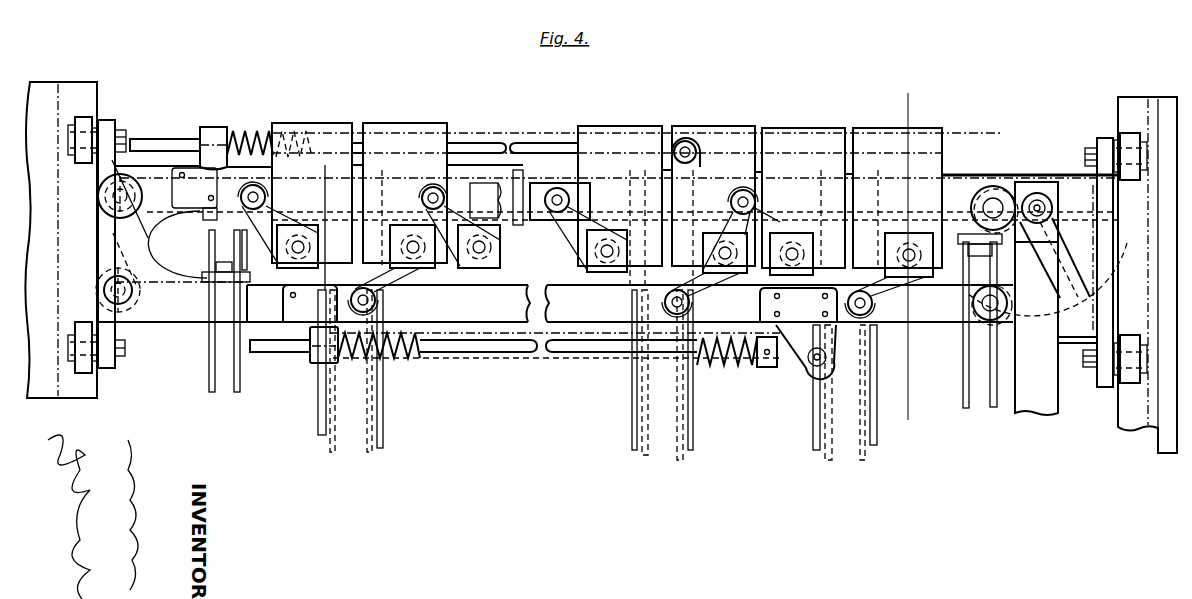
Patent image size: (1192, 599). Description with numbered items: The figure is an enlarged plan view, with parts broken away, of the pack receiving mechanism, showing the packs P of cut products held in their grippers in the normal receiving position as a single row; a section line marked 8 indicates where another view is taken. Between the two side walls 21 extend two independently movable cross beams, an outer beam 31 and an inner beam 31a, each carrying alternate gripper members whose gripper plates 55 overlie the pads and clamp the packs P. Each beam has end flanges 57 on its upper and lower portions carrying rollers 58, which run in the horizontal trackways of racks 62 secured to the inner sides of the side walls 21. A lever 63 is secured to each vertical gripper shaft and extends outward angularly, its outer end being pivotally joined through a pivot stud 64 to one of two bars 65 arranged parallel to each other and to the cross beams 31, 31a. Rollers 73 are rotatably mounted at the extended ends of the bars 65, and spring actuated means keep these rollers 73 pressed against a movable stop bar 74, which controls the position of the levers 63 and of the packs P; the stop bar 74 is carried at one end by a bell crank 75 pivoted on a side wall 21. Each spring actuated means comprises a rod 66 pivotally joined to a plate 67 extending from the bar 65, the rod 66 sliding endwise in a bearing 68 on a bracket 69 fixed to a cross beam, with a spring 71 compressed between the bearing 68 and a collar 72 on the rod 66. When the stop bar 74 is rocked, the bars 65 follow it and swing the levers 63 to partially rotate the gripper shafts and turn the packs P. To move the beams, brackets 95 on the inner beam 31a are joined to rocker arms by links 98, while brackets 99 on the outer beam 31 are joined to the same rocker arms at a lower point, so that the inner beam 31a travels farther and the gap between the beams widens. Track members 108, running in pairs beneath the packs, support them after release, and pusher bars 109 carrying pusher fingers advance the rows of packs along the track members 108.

The side wall 21 is at (36, 82).
The roller 58 is at (80, 117).
The end flange 57 is at (112, 122).
The rack 62 is at (97, 397).
The bracket 99 is at (200, 217).
The rod 66 is at (472, 141).
The spring 71 is at (242, 128).
The bearing 68 is at (312, 364).
The bracket 69 is at (284, 306).
The pack P is at (323, 123).
The lever 63 is at (283, 243).
The pivot stud 64 is at (422, 198).
The gripper plate 55 is at (492, 214).
The outer beam 31 is at (529, 222).
The inner beam 31a is at (922, 334).
The plate 67 is at (692, 144).
The collar 72 is at (765, 370).
The bar 65 is at (472, 321).
The bracket 95 is at (228, 281).
The link 98 is at (209, 376).
The track member 108 is at (320, 412).
The pusher bar 109 is at (367, 450).
The roller 73 is at (994, 186).
The bell crank 75 is at (1098, 262).
The stop bar 74 is at (1036, 416).
The section line 8 is at (924, 116).